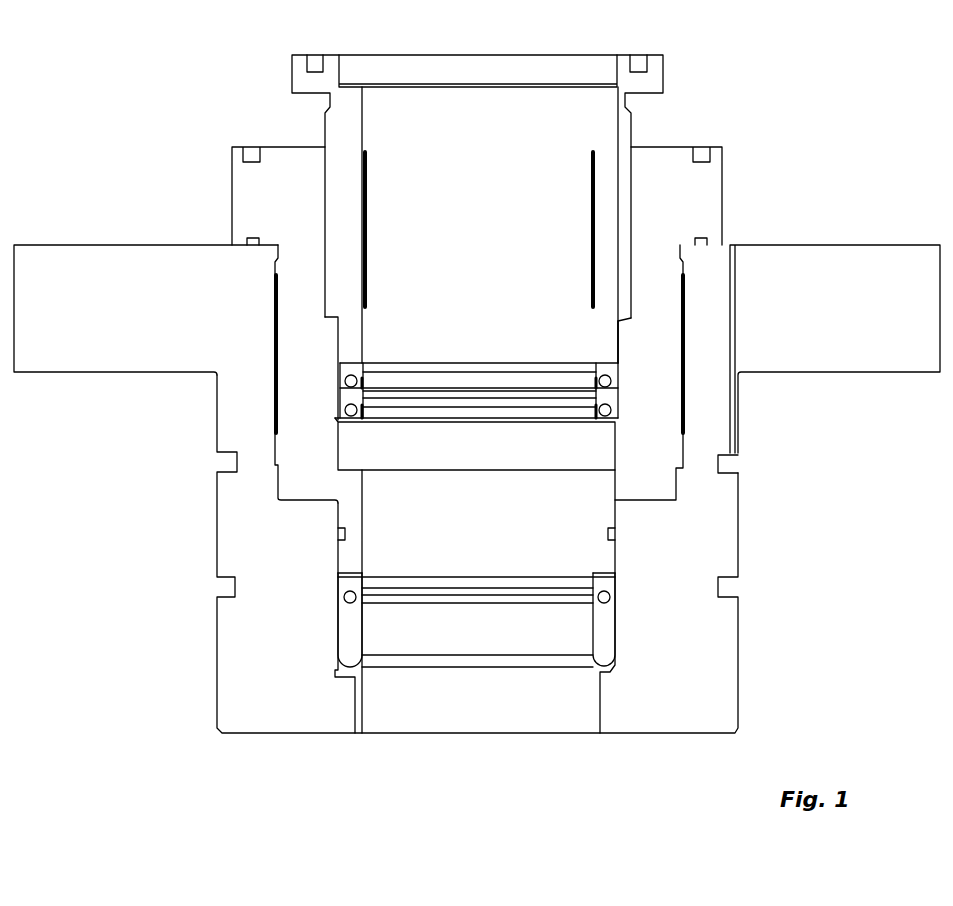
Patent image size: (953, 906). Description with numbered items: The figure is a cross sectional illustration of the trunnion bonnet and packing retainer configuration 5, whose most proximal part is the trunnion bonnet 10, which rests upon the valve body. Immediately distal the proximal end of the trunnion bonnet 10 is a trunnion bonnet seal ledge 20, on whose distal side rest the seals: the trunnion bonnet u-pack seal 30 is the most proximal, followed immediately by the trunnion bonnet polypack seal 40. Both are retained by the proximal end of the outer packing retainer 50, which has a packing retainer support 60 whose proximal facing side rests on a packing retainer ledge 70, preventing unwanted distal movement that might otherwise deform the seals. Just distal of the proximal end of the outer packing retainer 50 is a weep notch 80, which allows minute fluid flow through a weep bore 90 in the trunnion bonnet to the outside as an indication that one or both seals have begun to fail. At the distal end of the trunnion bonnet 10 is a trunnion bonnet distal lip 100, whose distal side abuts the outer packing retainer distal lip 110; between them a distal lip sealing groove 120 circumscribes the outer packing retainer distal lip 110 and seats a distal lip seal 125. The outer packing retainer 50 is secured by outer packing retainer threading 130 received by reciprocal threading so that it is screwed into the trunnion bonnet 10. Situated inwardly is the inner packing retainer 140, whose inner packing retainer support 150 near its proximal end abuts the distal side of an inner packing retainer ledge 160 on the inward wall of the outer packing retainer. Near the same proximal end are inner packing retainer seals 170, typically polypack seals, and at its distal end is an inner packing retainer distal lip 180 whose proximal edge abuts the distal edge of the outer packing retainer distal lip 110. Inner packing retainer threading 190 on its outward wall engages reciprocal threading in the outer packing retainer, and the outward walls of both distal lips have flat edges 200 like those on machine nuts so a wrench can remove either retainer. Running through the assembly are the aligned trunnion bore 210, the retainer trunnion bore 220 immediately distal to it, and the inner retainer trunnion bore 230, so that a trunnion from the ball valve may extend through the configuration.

The trunnion bonnet and packing retainer configuration 5 is at (504, 212).
The trunnion bonnet 10 is at (723, 702).
The trunnion bonnet seal ledge 20 is at (610, 672).
The trunnion bonnet u-pack seal 30 is at (608, 670).
The trunnion bonnet polypack seal 40 is at (602, 598).
The outer packing retainer 50 is at (291, 443).
The packing retainer support 60 is at (303, 496).
The packing retainer ledge 70 is at (303, 507).
The weep notch 80 is at (723, 465).
The weep bore 90 is at (735, 410).
The trunnion bonnet distal lip 100 is at (73, 372).
The outer packing retainer distal lip 110 is at (232, 172).
The distal lip sealing groove 120 is at (761, 196).
The distal lip seal 125 is at (700, 237).
The outer packing retainer threading 130 is at (682, 420).
The inner packing retainer 140 is at (323, 128).
The inner packing retainer support 150 is at (617, 365).
The inner packing retainer ledge 160 is at (619, 318).
The inner packing retainer seals 170 is at (510, 402).
The inner packing retainer distal lip 180 is at (663, 72).
The inner packing retainer threading 190 is at (358, 212).
The flat edges 200 is at (292, 72).
The trunnion bore 210 is at (441, 702).
The retainer trunnion bore 220 is at (369, 518).
The inner retainer trunnion bore 230 is at (474, 128).